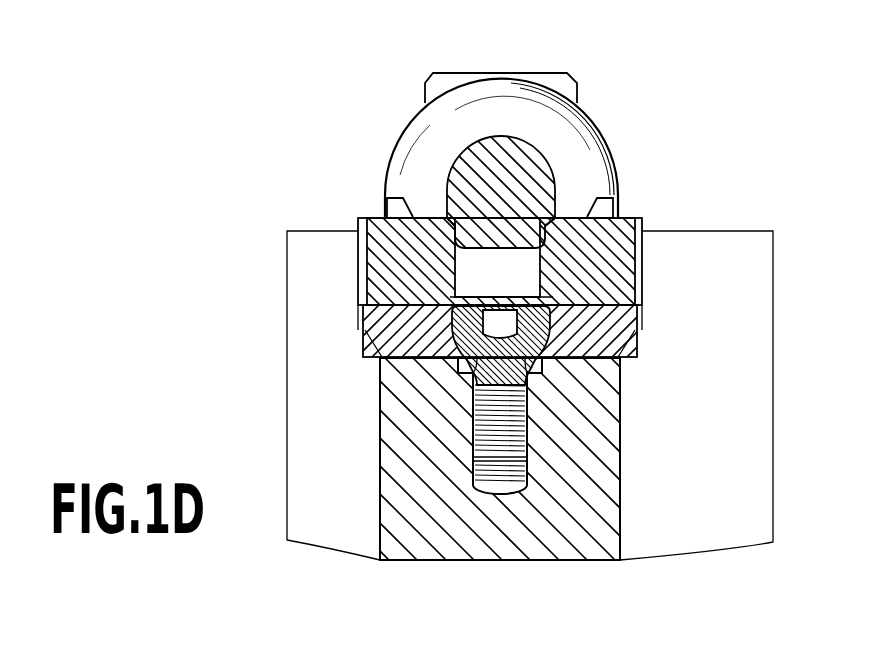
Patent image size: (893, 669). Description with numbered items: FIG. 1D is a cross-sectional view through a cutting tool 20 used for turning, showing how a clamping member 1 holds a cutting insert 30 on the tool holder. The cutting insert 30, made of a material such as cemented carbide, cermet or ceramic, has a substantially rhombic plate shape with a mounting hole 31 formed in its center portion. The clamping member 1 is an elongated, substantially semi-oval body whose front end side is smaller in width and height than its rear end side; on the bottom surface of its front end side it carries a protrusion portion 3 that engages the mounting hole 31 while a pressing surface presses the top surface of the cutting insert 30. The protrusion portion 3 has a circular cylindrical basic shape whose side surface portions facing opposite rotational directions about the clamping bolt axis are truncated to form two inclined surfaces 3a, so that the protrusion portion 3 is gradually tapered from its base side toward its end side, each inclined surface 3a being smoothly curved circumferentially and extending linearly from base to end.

The clamping member 1 is at (594, 104).
The protrusion portion 3 is at (506, 212).
The inclined surfaces 3a is at (453, 250).
The cutting tool 20 is at (318, 230).
The cutting insert 30 is at (380, 218).
The mounting hole 31 is at (548, 265).